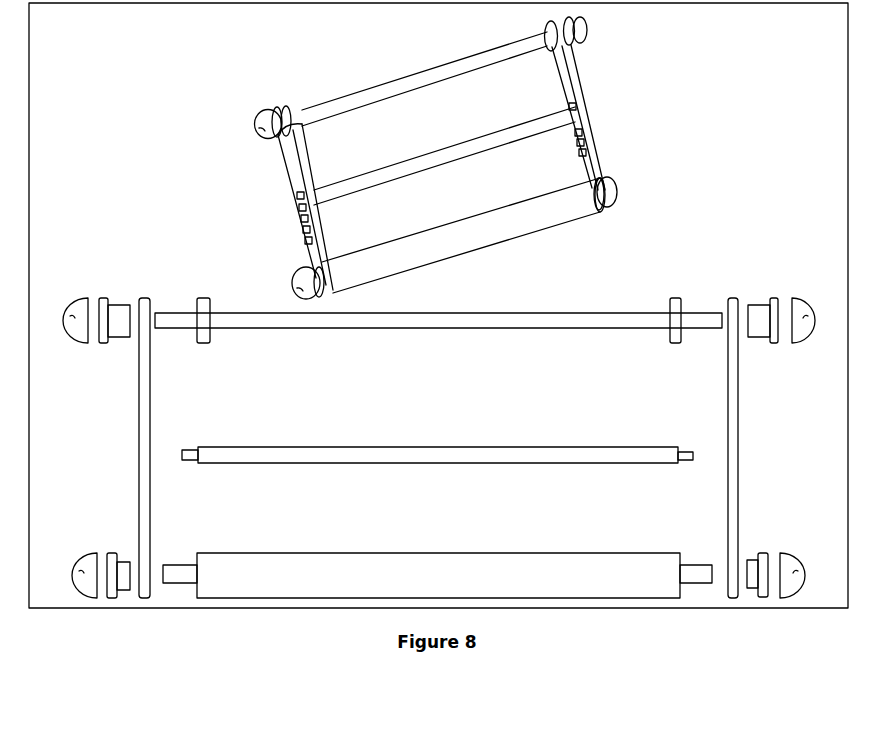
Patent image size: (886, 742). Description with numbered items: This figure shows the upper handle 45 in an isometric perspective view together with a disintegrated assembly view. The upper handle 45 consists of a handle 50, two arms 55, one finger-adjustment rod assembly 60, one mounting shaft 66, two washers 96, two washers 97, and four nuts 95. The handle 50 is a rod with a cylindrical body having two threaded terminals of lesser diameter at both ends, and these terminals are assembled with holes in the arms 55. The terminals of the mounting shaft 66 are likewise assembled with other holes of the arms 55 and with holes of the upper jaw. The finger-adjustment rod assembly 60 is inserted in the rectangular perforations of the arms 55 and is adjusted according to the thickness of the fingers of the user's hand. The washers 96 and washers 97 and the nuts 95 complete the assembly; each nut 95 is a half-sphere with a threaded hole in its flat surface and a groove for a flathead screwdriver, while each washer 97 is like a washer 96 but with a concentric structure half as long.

The upper handle 45 is at (428, 36).
The handle 50 is at (448, 237).
The arms 55 is at (293, 220).
The finger-adjustment rod assembly 60 is at (450, 163).
The mounting shaft 66 is at (450, 73).
The nut 95 is at (255, 125).
The washer 96 is at (273, 110).
The washer 97 is at (303, 267).